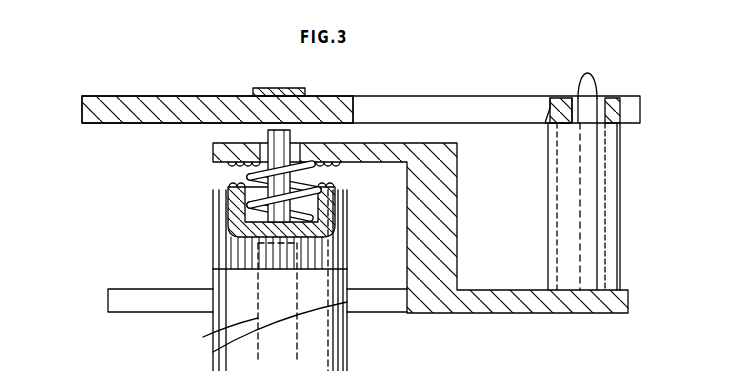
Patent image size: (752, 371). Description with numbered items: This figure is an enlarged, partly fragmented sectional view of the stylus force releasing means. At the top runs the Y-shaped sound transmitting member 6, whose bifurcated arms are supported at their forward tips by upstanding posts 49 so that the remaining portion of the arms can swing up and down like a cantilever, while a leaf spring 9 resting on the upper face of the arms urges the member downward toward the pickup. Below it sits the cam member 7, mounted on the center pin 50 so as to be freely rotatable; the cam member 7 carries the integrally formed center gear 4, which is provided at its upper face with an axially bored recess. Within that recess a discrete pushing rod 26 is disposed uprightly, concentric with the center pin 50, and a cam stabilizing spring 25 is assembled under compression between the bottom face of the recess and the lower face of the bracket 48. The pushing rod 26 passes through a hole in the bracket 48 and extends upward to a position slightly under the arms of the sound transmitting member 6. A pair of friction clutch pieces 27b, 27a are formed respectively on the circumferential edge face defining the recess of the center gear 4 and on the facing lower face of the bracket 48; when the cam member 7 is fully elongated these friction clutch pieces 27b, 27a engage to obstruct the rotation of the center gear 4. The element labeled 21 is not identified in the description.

The sound transmitting member 6 is at (338, 96).
The leaf spring 9 is at (262, 90).
The upstanding posts 49 is at (621, 233).
The bracket 48 is at (458, 231).
The friction clutch piece 27a is at (342, 167).
The friction clutch piece 27b is at (345, 194).
The base plate 21 is at (163, 292).
The cam member 7 is at (349, 338).
The center pin 50 is at (214, 333).
The center gear 4 is at (351, 234).
The cam stabilizing spring 25 is at (246, 176).
The pushing rod 26 is at (267, 133).